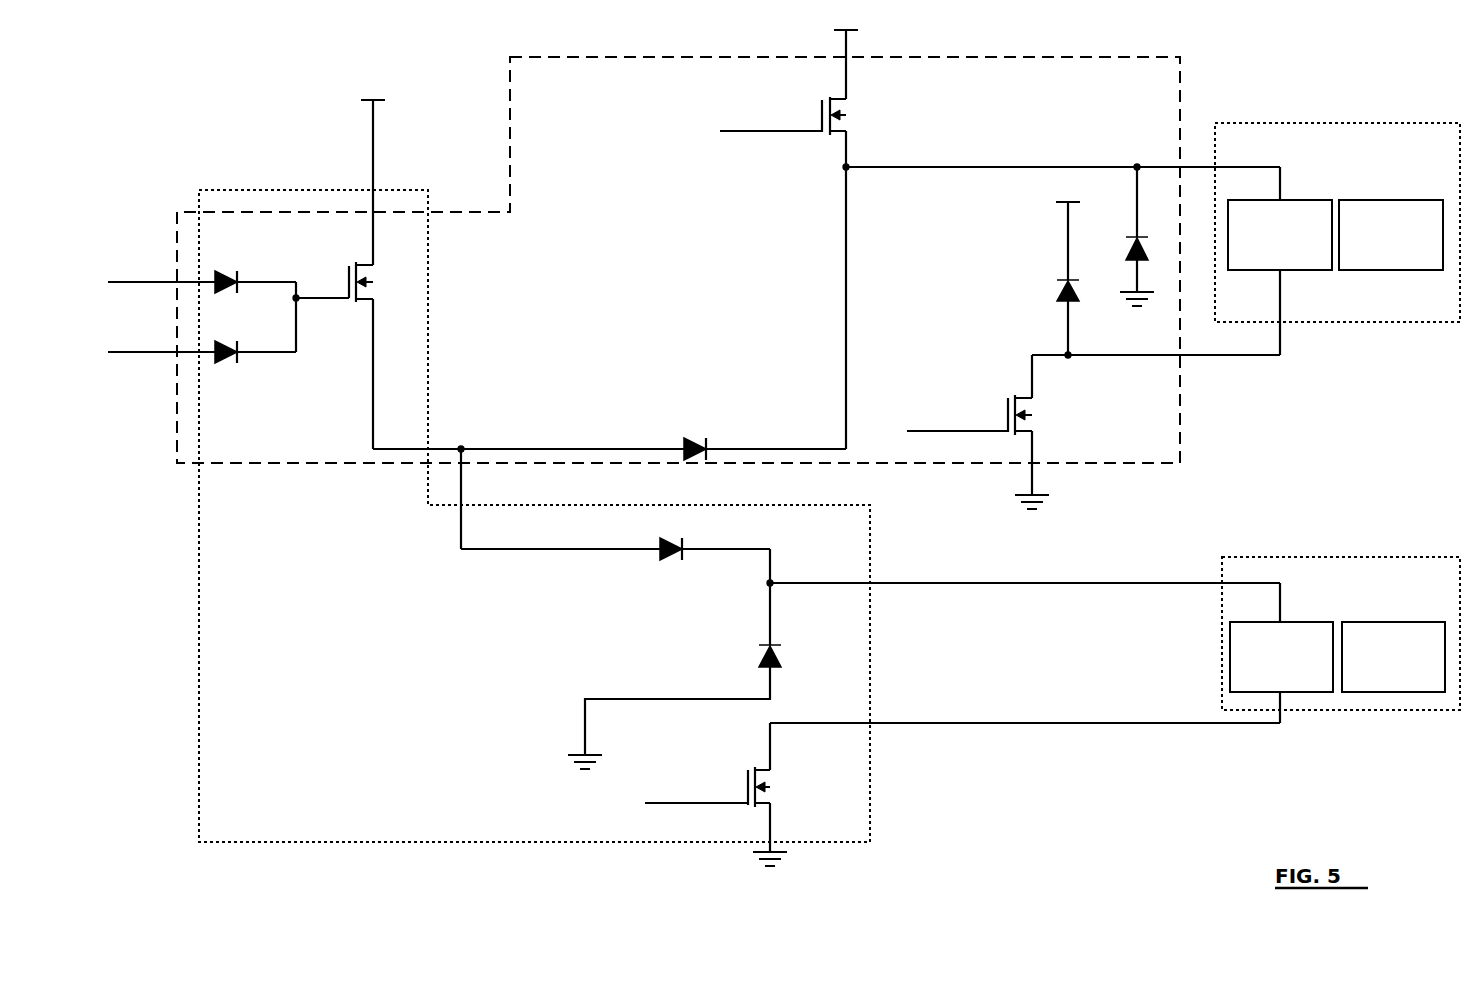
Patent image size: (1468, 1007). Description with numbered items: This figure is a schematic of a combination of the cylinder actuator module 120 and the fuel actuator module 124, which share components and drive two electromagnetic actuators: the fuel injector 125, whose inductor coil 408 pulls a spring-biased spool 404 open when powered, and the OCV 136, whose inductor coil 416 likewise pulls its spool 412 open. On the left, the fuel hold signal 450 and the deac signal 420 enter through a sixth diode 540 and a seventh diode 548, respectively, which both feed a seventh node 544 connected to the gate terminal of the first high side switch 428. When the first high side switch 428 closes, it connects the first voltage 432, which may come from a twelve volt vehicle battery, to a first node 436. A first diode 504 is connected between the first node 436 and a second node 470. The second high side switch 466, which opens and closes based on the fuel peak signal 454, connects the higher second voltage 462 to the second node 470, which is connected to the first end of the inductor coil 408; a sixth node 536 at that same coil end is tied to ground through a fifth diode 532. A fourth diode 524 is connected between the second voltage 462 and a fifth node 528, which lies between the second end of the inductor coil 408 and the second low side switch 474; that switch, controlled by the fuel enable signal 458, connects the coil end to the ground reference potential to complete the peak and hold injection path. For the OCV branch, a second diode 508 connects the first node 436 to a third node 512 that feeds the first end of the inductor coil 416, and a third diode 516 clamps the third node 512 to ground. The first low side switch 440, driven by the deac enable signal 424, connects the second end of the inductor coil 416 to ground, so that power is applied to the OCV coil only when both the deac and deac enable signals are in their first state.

The fuel actuator module 124 is at (580, 57).
The cylinder actuator module 120 is at (310, 190).
The fuel injector 125 is at (1340, 123).
The OCV 136 is at (1342, 557).
The inductor coil 408 is at (1302, 200).
The spool 404 is at (1389, 200).
The inductor coil 416 is at (1297, 622).
The spool 412 is at (1392, 622).
The fuel hold signal 450 is at (135, 282).
The deac signal 420 is at (152, 353).
The sixth diode 540 is at (225, 272).
The seventh diode 548 is at (228, 364).
The seventh node 544 is at (296, 298).
The first voltage 432 is at (373, 115).
The first high side switch 428 is at (360, 266).
The first node 436 is at (461, 449).
The first diode 504 is at (693, 438).
The second voltage 462 is at (846, 32).
The second high side switch 466 is at (846, 97).
The fuel peak signal 454 is at (745, 131).
The second node 470 is at (846, 167).
The sixth node 536 is at (1137, 167).
The fifth diode 532 is at (1132, 252).
The fourth diode 524 is at (1060, 298).
The fifth node 528 is at (1066, 354).
The second low side switch 474 is at (1033, 398).
The fuel enable signal 458 is at (940, 431).
The second diode 508 is at (672, 542).
The third node 512 is at (772, 583).
The third diode 516 is at (782, 650).
The first low side switch 440 is at (772, 770).
The deac enable signal 424 is at (680, 803).